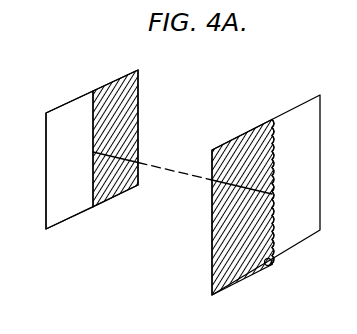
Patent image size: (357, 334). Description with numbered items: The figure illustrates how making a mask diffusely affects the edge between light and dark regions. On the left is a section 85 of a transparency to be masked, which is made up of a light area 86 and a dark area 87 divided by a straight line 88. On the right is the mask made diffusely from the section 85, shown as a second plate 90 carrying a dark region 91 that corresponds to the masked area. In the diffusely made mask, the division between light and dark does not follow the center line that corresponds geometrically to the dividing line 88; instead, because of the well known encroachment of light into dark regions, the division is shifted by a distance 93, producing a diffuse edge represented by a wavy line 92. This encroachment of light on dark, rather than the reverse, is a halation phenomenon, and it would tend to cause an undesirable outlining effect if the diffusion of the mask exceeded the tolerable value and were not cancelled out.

The section of a transparency 85 is at (46, 137).
The light area 86 is at (78, 103).
The dark area 87 is at (118, 85).
The line 88 is at (93, 153).
The second plate 90 is at (293, 118).
The opaque region of second plate 91 is at (267, 143).
The wavy line 92 is at (274, 188).
The distance 93 is at (268, 266).